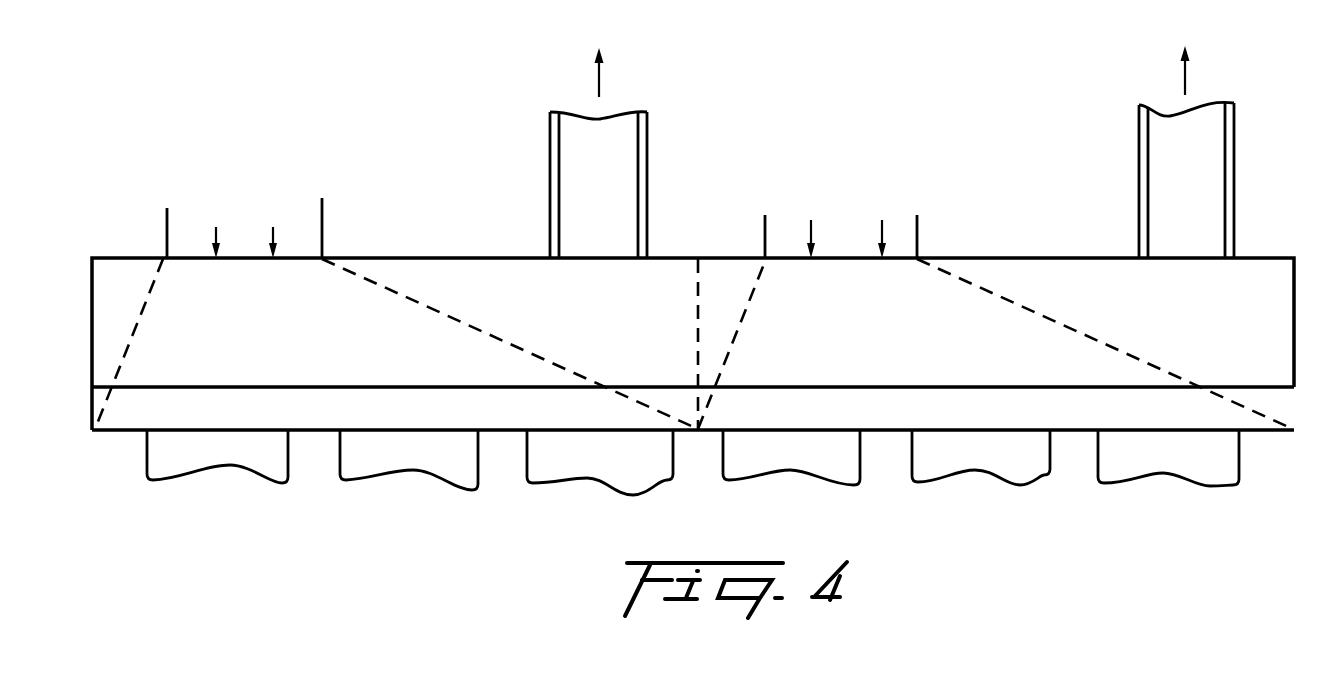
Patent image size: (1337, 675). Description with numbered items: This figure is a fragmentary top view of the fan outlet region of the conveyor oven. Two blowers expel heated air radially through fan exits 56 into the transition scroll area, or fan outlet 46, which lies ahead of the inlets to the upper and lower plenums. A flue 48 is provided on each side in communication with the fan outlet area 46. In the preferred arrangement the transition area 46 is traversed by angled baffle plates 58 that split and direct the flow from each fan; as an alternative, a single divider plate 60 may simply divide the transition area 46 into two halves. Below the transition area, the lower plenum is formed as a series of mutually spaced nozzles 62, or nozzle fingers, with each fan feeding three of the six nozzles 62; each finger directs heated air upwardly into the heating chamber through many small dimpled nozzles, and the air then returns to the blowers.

The fan outlet 46 is at (561, 314).
The flue 48 is at (647, 150).
The fan exit 56 is at (309, 238).
The baffle plate 58 is at (132, 338).
The divider plate 60 is at (697, 340).
The nozzle 62 is at (360, 477).